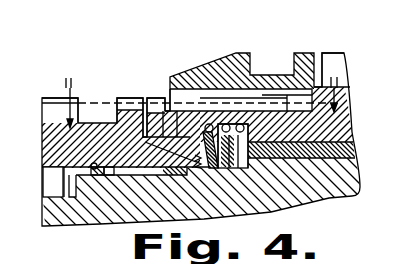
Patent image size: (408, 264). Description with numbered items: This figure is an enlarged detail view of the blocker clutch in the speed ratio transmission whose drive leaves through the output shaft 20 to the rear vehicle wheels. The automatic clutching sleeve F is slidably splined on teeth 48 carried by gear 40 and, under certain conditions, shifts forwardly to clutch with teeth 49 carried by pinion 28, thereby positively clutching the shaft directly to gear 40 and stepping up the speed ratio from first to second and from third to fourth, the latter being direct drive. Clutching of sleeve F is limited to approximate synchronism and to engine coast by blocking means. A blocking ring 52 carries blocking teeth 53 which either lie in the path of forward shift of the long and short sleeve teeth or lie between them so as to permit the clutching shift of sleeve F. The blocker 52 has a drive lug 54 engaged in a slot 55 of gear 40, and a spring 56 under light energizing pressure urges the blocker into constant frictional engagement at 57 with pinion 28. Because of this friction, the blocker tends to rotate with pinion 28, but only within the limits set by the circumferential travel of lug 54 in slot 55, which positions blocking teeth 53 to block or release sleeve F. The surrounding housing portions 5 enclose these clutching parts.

The housing body 5 is at (204, 127).
The output shaft 20 is at (328, 188).
The pinion 28 is at (45, 97).
The gear 40 is at (344, 54).
The teeth 48 is at (270, 103).
The teeth 49 is at (124, 97).
The blocking ring 52 is at (172, 140).
The blocking teeth 53 is at (152, 99).
The drive lug 54 is at (174, 99).
The slot 55 is at (184, 97).
The spring 56 is at (232, 136).
The frictional engagement 57 is at (181, 170).
The automatic clutching sleeve F is at (240, 33).